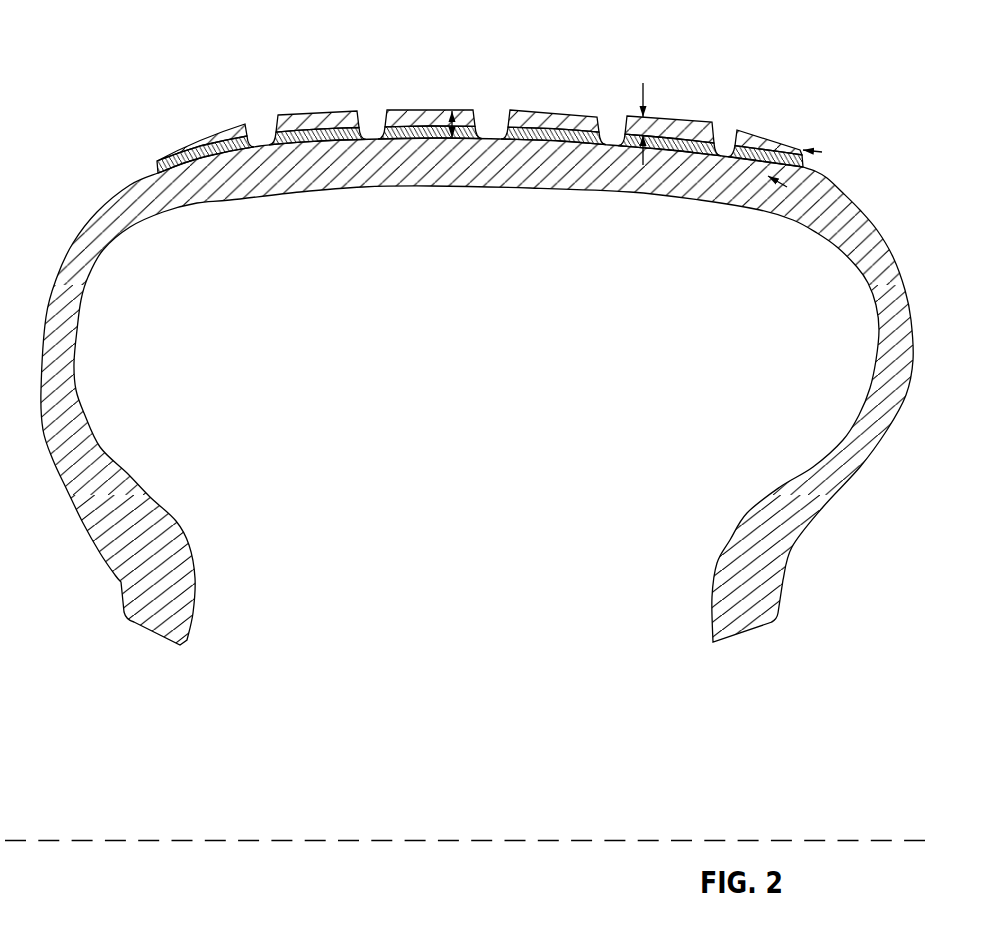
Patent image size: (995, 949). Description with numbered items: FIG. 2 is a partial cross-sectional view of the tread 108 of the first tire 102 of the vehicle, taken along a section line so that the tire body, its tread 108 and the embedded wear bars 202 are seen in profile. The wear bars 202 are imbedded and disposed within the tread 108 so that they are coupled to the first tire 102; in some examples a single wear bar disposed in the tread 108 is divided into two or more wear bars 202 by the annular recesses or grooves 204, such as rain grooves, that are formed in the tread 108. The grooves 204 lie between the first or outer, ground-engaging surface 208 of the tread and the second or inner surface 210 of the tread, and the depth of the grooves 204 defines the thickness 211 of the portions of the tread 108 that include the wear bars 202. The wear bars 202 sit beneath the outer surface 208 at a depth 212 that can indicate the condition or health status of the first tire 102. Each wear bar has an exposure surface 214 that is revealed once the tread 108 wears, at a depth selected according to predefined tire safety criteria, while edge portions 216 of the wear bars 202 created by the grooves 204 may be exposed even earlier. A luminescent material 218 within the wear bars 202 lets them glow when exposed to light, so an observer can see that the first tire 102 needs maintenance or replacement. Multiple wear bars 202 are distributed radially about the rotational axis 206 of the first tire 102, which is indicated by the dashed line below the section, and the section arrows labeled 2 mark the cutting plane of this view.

The first tire 102 is at (798, 55).
The wear bars 202 is at (155, 160).
The grooves 204 is at (253, 117).
The tread 108 is at (268, 122).
The outer surface 208 is at (283, 112).
The inner surface 210 is at (257, 152).
The thickness 211 is at (450, 127).
The depth 212 is at (643, 165).
The exposure surface 214 is at (187, 147).
The portions 216 is at (720, 153).
The material 218 is at (166, 163).
The rotational axis 206 is at (243, 842).
The section line 2 is at (803, 173).